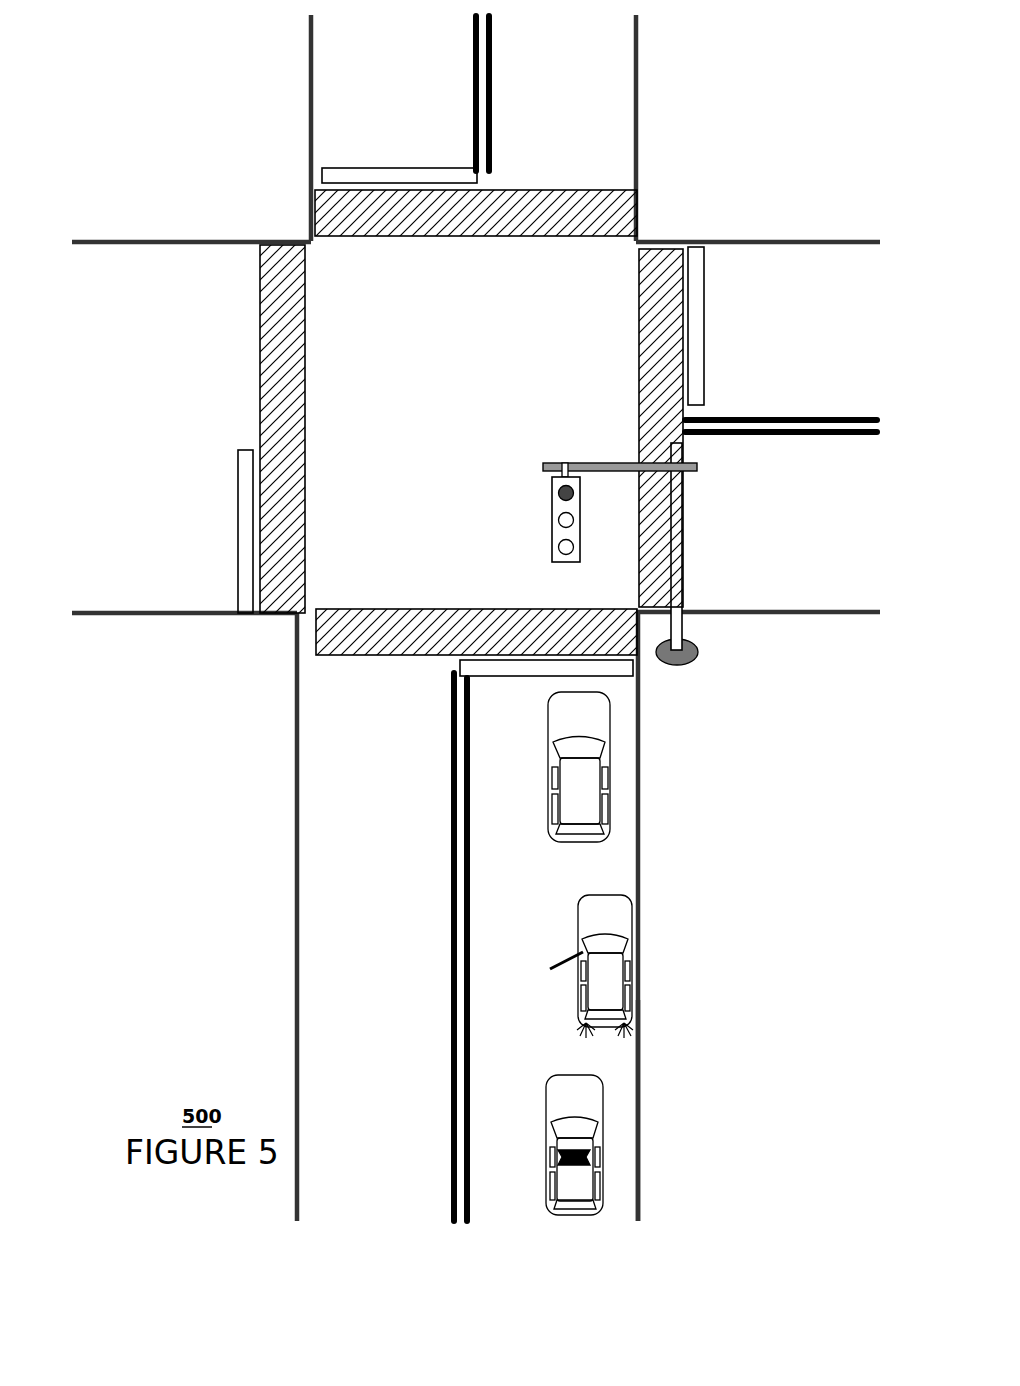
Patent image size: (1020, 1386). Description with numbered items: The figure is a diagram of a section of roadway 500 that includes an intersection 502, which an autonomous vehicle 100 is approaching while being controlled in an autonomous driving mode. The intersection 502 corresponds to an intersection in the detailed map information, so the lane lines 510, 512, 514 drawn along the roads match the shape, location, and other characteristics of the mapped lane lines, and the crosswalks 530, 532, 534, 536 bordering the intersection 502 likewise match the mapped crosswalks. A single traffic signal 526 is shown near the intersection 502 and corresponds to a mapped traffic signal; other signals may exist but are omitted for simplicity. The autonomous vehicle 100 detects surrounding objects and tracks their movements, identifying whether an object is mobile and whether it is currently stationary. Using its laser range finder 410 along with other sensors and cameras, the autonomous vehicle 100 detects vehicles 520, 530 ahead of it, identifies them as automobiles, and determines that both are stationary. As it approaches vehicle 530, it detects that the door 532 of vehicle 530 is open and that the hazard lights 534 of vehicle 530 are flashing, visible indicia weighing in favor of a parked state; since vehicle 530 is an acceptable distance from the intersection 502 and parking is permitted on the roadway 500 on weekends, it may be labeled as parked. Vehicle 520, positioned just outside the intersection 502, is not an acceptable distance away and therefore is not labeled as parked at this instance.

The section of roadway 500 is at (623, 1072).
The intersection 502 is at (328, 560).
The lane line 510 is at (450, 825).
The lane line 512 is at (845, 437).
The lane line 514 is at (473, 80).
The vehicle 520 is at (590, 782).
The traffic signal 526 is at (562, 463).
The crosswalk / vehicle 530 is at (360, 655).
The crosswalk / door 532 is at (668, 270).
The crosswalk / hazard lights 534 is at (600, 190).
The crosswalk 536 is at (282, 270).
The autonomous vehicle 100 is at (583, 1185).
The laser range finder 410 is at (583, 1150).